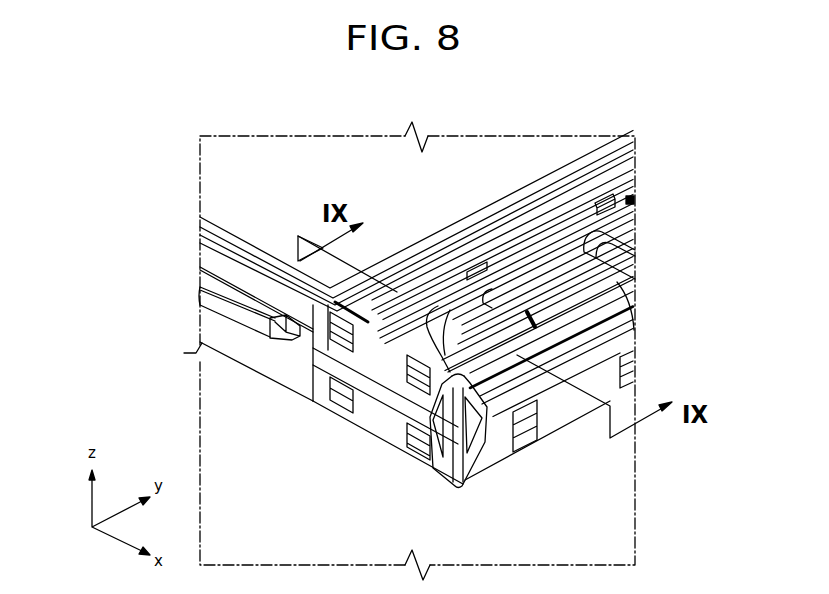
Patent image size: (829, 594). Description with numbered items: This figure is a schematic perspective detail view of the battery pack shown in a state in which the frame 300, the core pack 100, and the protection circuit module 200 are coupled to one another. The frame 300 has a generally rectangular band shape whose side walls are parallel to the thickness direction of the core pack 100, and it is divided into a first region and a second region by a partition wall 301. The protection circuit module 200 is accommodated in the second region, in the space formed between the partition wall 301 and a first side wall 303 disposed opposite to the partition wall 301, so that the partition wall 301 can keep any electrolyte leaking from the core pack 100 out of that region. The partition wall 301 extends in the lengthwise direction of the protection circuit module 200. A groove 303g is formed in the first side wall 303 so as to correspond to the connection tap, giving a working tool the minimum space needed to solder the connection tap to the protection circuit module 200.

The core pack 100 is at (382, 187).
The protection circuit module 200 is at (628, 273).
The frame 300 is at (349, 441).
The partition wall 301 is at (535, 279).
The first side wall 303 is at (537, 330).
The groove 303g is at (517, 306).